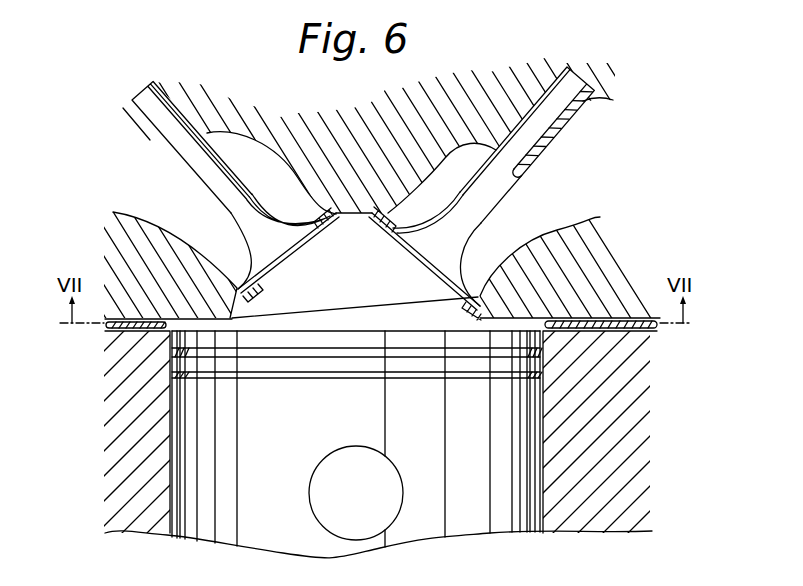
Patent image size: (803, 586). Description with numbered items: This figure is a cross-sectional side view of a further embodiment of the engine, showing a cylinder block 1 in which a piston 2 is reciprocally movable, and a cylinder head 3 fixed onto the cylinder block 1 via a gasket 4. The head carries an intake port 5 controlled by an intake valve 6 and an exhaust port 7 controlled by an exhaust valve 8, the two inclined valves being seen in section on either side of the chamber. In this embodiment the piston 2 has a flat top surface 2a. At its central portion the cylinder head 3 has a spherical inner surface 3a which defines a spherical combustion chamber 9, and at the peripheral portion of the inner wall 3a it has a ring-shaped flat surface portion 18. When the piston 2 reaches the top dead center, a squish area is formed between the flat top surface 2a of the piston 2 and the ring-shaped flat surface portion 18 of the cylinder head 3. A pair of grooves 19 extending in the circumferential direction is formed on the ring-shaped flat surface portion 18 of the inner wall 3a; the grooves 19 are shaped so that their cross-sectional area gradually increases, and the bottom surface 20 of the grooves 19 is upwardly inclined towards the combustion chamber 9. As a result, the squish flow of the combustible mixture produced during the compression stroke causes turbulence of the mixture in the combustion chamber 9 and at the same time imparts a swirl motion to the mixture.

The cylinder block 1 is at (570, 447).
The piston 2 is at (513, 495).
The top surface of the piston 2a is at (262, 308).
The cylinder head 3 is at (300, 152).
The inner wall of the cylinder head 3a is at (352, 214).
The gasket 4 is at (640, 327).
The intake port 5 is at (554, 216).
The intake valve 6 is at (545, 115).
The exhaust port 7 is at (192, 215).
The exhaust valve 8 is at (176, 136).
The combustion chamber 9 is at (370, 304).
The ring-shaped flat surface portion 18 is at (502, 318).
The grooves 19 is at (396, 310).
The bottom surface of the grooves 20 is at (430, 310).